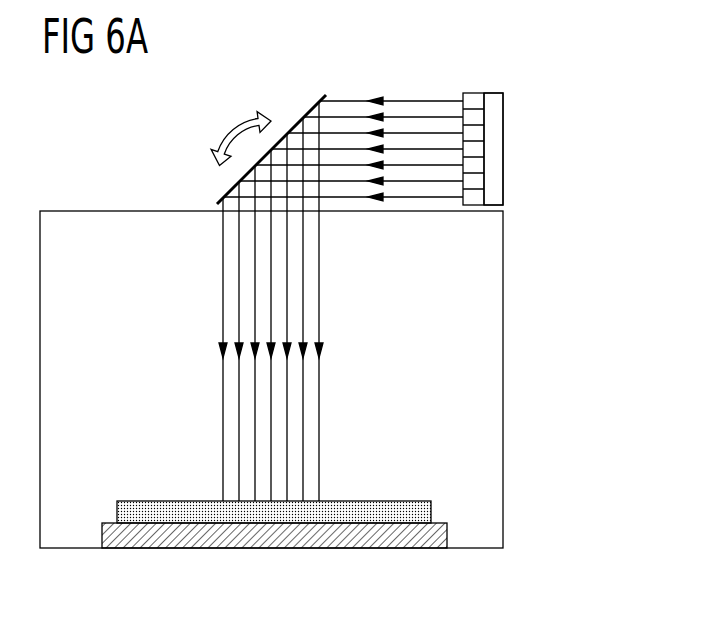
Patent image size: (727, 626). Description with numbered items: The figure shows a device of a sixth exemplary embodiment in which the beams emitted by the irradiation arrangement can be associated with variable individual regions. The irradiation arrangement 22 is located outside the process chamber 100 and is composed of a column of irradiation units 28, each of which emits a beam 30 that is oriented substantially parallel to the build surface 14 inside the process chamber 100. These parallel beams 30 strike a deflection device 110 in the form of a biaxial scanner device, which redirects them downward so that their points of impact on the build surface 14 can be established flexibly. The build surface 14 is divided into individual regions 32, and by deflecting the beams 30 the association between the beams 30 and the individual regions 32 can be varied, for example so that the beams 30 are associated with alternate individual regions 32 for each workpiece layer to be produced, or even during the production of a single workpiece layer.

The process chamber 100 is at (504, 302).
The irradiation unit 28 is at (511, 105).
The irradiation arrangement 22 is at (496, 146).
The beams 30 is at (387, 100).
The deflection device 110 is at (309, 104).
The build surface 14 is at (399, 492).
The individual regions 32 is at (282, 518).